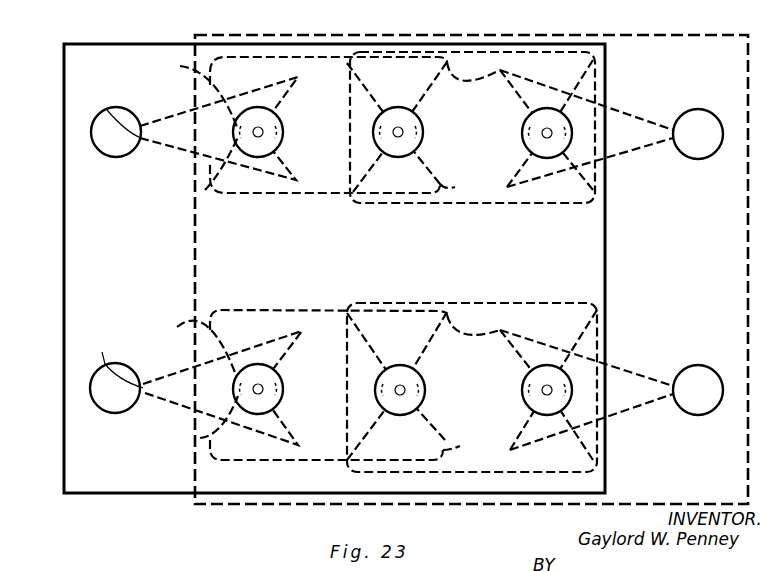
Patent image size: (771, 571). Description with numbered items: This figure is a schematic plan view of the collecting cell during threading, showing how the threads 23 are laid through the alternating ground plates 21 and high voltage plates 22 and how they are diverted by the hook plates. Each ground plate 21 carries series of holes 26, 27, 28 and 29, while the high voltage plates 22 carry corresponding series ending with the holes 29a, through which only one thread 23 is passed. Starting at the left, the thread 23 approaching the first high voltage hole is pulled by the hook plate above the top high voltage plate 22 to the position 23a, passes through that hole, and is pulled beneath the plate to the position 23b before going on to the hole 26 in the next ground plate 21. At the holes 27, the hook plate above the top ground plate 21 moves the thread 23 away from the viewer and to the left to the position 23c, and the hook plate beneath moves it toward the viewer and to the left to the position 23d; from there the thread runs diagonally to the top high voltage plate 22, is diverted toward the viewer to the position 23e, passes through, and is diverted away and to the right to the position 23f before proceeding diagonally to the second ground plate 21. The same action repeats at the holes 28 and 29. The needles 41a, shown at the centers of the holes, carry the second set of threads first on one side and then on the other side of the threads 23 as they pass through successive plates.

The ground plates 21 is at (63, 62).
The high voltage plates 22 is at (213, 34).
The threads 23 is at (107, 107).
The thread position 23a is at (297, 163).
The thread position 23b is at (298, 85).
The thread position 23c is at (207, 83).
The thread position 23d is at (212, 176).
The thread position 23e is at (445, 176).
The thread position 23f is at (448, 80).
The holes 26 is at (110, 146).
The holes 27 is at (283, 131).
The holes 28 is at (425, 129).
The holes 29 is at (524, 135).
The holes 29a is at (692, 121).
The needles 41a is at (262, 127).